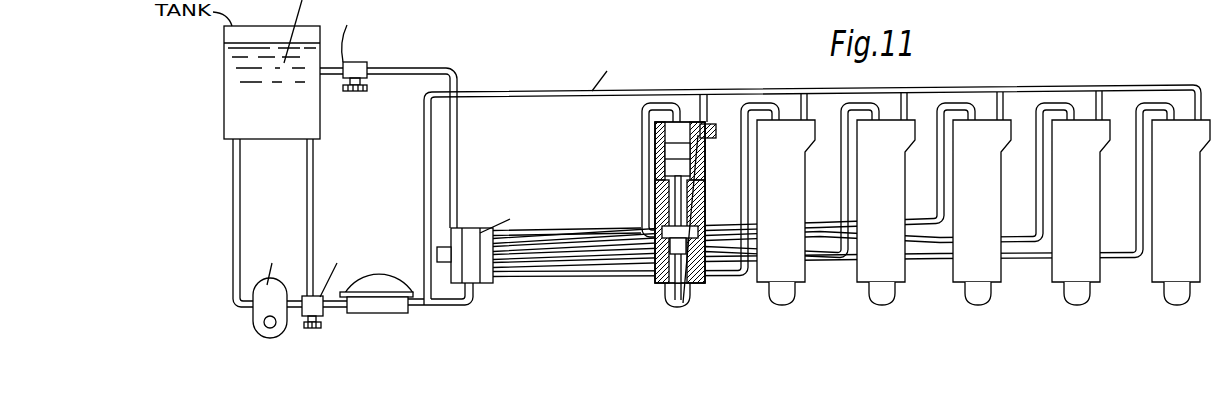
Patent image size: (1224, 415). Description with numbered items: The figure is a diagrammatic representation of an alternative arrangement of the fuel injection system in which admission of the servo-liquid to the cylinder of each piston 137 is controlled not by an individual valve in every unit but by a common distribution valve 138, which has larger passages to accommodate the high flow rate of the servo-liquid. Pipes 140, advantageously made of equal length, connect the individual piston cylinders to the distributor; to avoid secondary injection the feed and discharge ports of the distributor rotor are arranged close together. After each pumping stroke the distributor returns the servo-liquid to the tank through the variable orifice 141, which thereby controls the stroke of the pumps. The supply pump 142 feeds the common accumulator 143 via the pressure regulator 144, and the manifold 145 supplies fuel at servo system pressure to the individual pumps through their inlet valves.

The piston 137 is at (672, 166).
The distribution valve 138 is at (472, 268).
The pipes 140 is at (550, 265).
The variable orifice 141 is at (358, 62).
The supply pump 142 is at (264, 296).
The accumulator 143 is at (370, 308).
The pressure regulator 144 is at (316, 309).
The manifold 145 is at (538, 79).